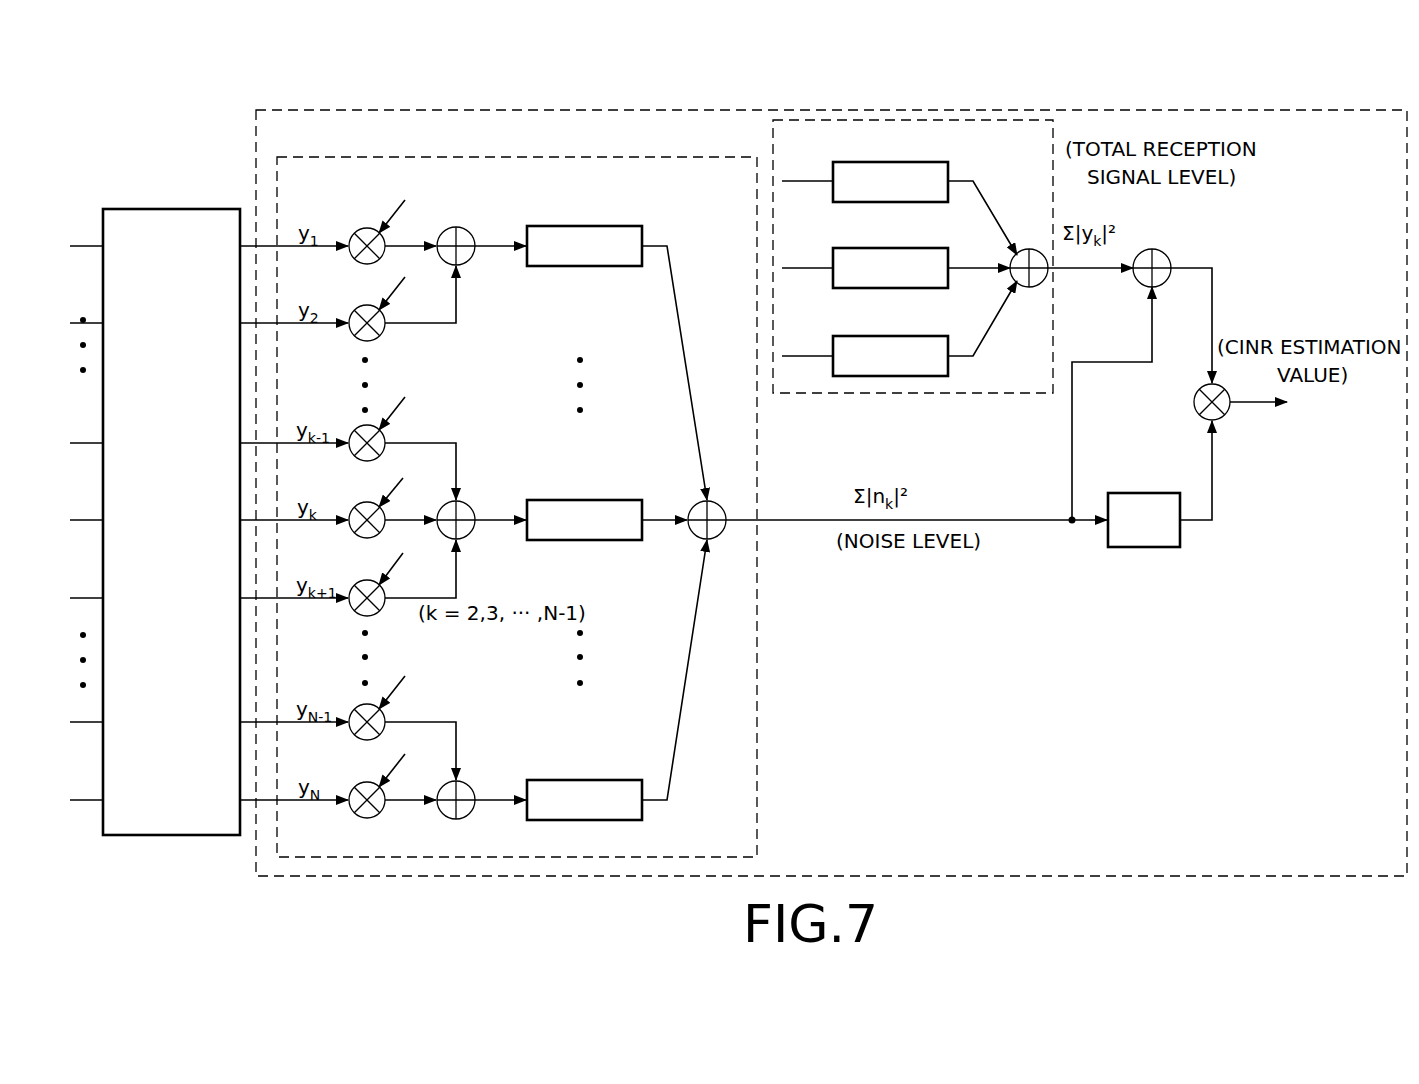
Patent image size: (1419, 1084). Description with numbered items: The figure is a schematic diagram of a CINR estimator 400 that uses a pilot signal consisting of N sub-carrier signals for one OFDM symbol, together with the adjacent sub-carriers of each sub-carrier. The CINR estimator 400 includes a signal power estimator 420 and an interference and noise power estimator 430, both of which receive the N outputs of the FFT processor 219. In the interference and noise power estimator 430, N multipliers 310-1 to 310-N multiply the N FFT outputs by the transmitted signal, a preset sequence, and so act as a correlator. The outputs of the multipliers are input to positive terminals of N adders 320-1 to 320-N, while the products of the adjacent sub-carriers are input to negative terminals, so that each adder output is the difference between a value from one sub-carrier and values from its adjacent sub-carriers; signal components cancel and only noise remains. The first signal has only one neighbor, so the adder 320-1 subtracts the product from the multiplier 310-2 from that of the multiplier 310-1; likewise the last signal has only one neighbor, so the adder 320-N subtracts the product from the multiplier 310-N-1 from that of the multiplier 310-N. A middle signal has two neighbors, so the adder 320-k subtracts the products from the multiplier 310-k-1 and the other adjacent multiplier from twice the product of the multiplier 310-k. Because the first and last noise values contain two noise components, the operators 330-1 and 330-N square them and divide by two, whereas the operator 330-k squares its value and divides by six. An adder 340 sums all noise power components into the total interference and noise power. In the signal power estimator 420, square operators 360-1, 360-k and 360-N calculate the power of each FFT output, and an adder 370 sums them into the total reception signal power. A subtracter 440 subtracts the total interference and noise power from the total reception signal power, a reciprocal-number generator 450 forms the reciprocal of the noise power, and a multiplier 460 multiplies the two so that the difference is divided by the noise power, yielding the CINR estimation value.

The FFT processor 219 is at (178, 209).
The multiplier 310-1 is at (356, 228).
The multiplier 310-2 is at (383, 333).
The multiplier 310-k-1 is at (385, 433).
The multiplier 310-k is at (352, 536).
The multiplier 310-N-1 is at (385, 712).
The multiplier 310-N is at (362, 820).
The adder 320-1 is at (460, 227).
The adder 320-k is at (470, 540).
The adder 320-N is at (468, 816).
The operator 330-1 is at (590, 226).
The operator 330-k is at (590, 500).
The operator 330-N is at (590, 780).
The adder 340 is at (718, 505).
The square operator 360-1 is at (893, 162).
The square operator 360-k is at (893, 248).
The square operator 360-N is at (893, 336).
The adder 370 is at (1032, 250).
The CINR estimator 400 is at (697, 110).
The signal power estimator 420 is at (1003, 394).
The interference and noise power estimator 430 is at (757, 675).
The subtracter 440 is at (1153, 251).
The reciprocal-number generator 450 is at (1144, 493).
The multiplier 460 is at (1226, 417).